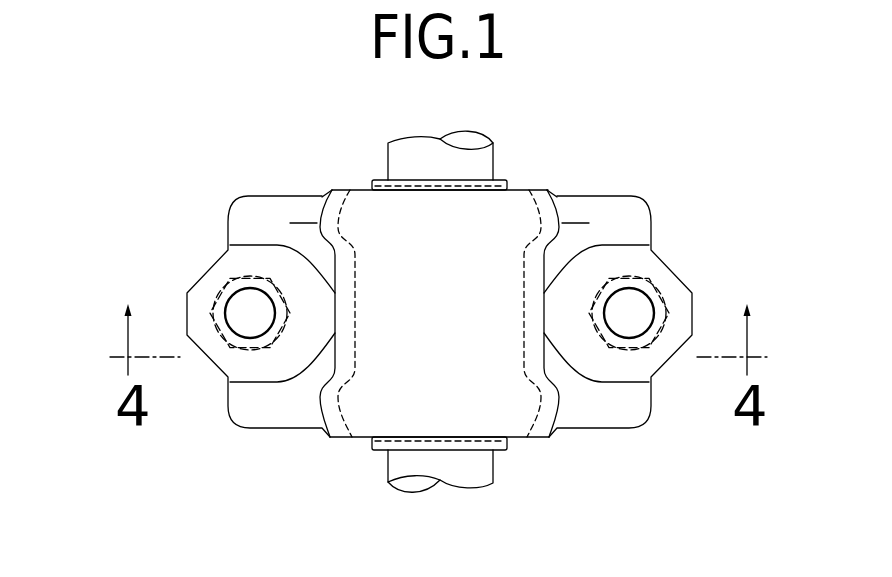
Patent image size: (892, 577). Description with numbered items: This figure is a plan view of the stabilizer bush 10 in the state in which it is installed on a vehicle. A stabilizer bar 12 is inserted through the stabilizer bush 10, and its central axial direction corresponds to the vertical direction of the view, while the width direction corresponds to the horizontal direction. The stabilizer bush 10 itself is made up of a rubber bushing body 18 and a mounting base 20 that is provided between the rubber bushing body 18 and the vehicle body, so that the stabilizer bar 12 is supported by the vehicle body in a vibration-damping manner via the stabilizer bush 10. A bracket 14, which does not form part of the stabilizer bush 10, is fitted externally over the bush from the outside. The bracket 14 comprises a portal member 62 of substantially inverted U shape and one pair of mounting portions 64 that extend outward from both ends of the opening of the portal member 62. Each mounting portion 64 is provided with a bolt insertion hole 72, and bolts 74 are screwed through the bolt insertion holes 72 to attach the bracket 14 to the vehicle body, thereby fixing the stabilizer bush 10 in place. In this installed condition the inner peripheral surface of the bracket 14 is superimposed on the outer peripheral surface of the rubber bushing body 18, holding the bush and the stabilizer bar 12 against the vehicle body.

The stabilizer bush 10 is at (534, 154).
The stabilizer bar 12 is at (408, 152).
The bracket 14 is at (234, 167).
The rubber bushing body 18 is at (361, 452).
The mounting base 20 is at (547, 427).
The portal member 62 is at (319, 204).
The mounting portions 64 is at (248, 222).
The bolt insertion holes 72 is at (233, 322).
The bolts 74 is at (228, 286).